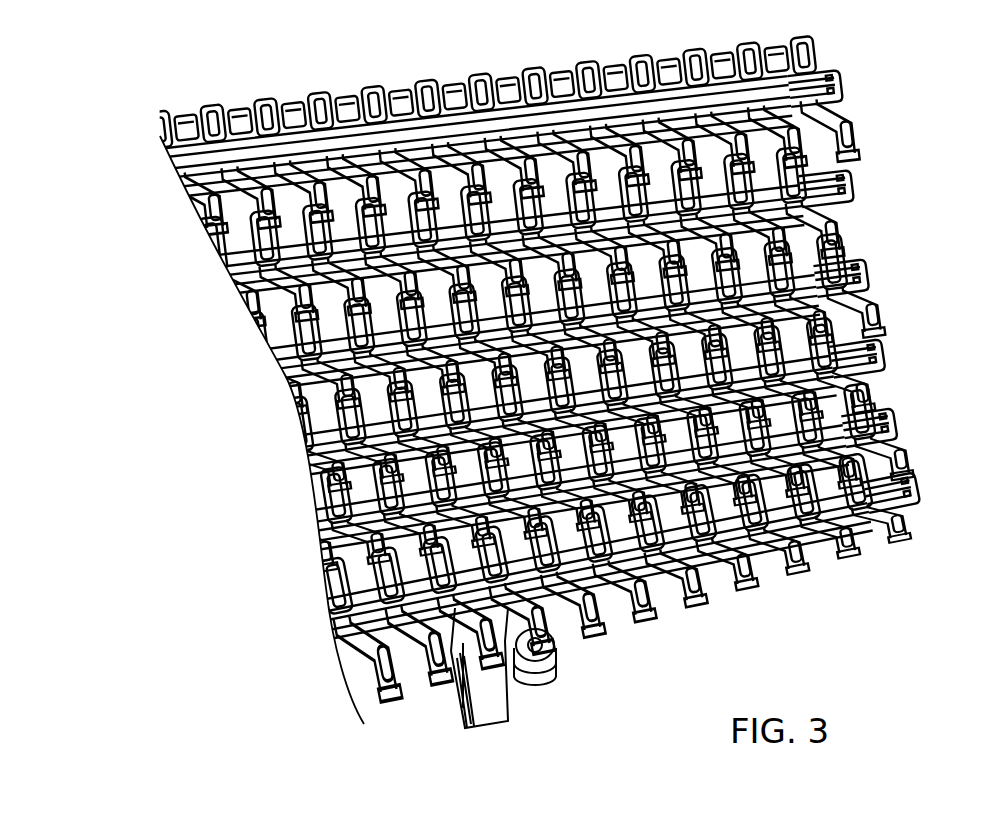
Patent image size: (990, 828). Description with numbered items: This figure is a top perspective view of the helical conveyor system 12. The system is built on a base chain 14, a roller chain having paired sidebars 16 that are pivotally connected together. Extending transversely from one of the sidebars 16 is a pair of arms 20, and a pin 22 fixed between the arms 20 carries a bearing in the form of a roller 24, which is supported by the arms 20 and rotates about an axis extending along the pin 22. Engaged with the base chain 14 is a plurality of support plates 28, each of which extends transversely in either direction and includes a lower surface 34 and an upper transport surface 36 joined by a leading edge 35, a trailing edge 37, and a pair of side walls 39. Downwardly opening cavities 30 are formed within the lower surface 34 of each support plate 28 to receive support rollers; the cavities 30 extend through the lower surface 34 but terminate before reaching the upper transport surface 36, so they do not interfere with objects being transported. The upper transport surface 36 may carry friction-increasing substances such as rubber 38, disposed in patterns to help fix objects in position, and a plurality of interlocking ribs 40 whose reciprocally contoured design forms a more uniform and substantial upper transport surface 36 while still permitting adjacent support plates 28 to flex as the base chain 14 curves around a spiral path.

The helical conveyor system 12 is at (541, 377).
The base chain 14 is at (528, 688).
The sidebars 16 is at (465, 692).
The arms 20 is at (526, 673).
The pin 22 is at (541, 639).
The roller 24 is at (546, 660).
The support plates 28 is at (850, 186).
The cavities 30 is at (841, 537).
The lower surface 34 is at (823, 112).
The leading edge 35 is at (891, 517).
The upper transport surface 36 is at (736, 38).
The trailing edge 37 is at (887, 441).
The rubber 38 is at (471, 86).
The side walls 39 is at (880, 330).
The interlocking ribs 40 is at (808, 564).